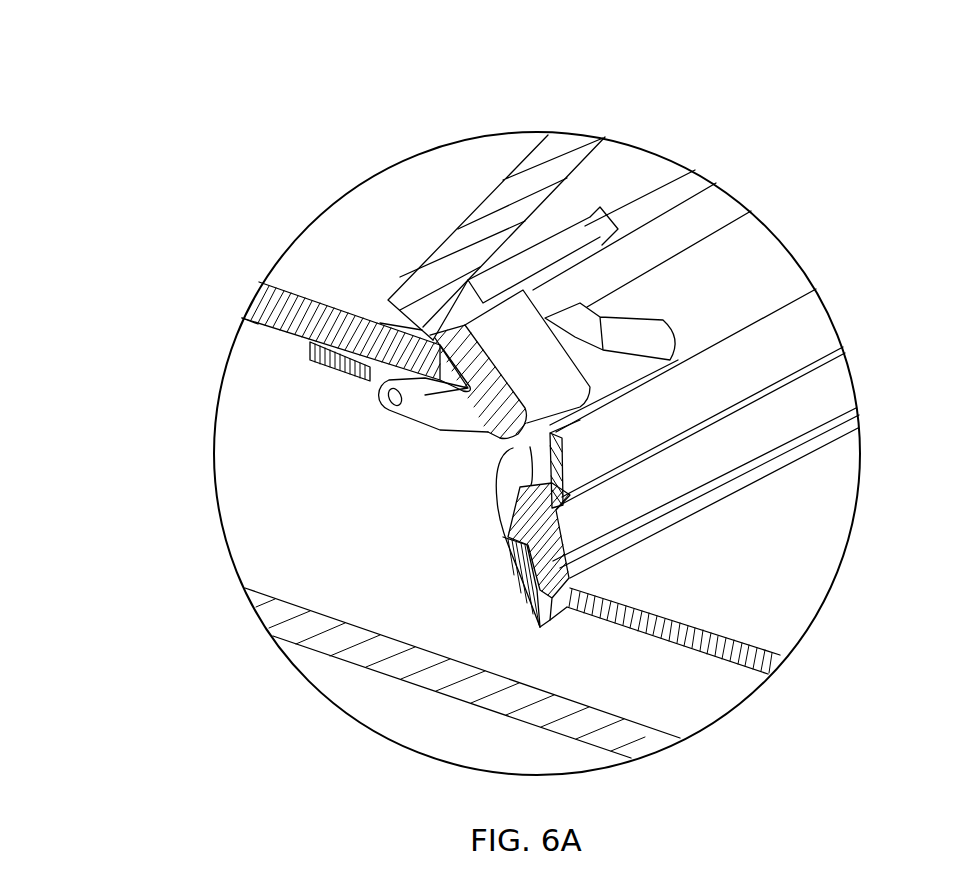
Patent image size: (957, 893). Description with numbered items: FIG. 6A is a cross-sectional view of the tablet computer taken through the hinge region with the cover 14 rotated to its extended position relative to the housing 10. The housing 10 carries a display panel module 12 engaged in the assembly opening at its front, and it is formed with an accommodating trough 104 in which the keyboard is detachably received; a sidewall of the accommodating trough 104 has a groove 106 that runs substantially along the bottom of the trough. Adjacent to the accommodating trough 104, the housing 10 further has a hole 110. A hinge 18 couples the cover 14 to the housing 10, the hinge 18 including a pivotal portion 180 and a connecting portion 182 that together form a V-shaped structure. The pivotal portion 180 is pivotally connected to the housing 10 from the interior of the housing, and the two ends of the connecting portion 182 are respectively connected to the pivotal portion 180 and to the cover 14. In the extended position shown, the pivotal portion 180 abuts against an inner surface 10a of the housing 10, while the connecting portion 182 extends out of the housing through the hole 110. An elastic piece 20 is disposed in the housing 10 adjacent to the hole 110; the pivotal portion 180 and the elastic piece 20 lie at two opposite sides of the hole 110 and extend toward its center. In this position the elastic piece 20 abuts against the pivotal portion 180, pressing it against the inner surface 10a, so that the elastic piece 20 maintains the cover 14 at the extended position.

The housing 10 is at (360, 232).
The inner surface 10a is at (250, 320).
The display panel module 12 is at (367, 672).
The cover 14 is at (560, 155).
The hinge 18 is at (120, 452).
The pivotal portion 180 is at (445, 393).
The connecting portion 182 is at (535, 355).
The elastic piece 20 is at (513, 583).
The accommodating trough 104 is at (815, 522).
The groove 106 is at (805, 403).
The hole 110 is at (667, 320).